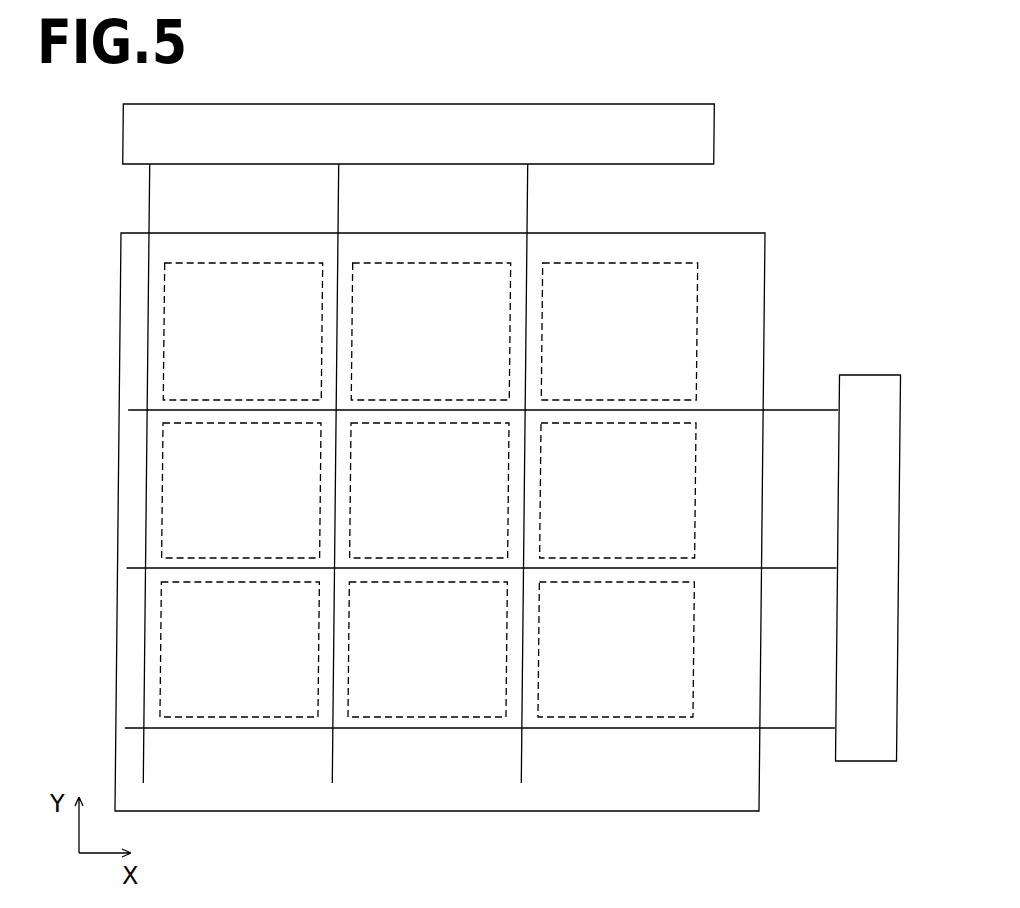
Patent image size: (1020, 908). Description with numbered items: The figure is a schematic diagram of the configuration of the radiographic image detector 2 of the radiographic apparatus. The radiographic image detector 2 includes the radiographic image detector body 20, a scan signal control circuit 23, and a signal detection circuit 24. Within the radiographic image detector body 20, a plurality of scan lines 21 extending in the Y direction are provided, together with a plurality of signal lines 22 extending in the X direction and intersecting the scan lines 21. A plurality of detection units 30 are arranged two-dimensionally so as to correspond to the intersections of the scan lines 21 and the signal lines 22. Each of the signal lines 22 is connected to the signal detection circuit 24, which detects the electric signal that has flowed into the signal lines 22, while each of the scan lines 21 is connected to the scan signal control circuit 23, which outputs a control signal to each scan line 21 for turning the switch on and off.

The radiographic image detector 2 is at (509, 451).
The radiographic image detector body 20 is at (765, 233).
The scan line 21 is at (558, 757).
The signal line 22 is at (797, 689).
The scan signal control circuit 23 is at (713, 135).
The signal detection circuit 24 is at (871, 375).
The detection unit 30 is at (647, 262).